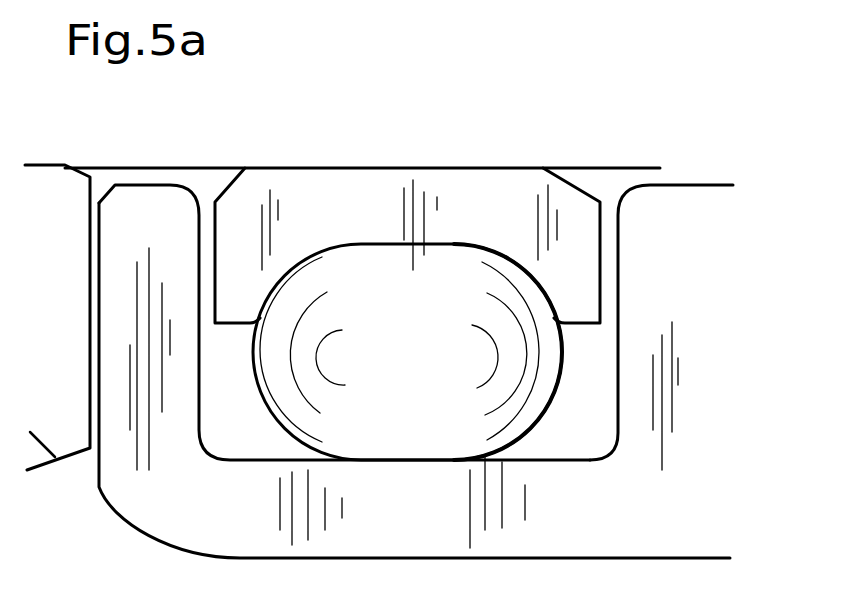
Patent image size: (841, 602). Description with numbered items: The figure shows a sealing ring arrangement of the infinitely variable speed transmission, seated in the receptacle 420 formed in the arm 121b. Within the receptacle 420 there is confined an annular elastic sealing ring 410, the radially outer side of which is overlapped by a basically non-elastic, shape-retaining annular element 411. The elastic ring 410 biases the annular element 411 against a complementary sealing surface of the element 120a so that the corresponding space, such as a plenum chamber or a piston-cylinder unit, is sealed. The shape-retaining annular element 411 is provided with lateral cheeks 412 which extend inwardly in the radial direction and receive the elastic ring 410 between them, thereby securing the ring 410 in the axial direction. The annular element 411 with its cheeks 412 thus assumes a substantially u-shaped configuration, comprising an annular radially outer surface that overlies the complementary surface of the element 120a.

The element 120a is at (284, 148).
The arm 121b is at (183, 510).
The elastic sealing ring 410 is at (467, 428).
The annular element 411 is at (440, 188).
The lateral cheeks 412 is at (585, 263).
The receptacle 420 is at (598, 416).